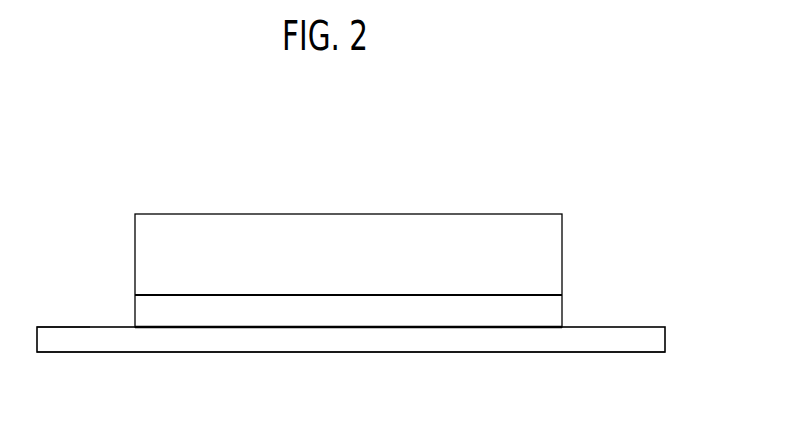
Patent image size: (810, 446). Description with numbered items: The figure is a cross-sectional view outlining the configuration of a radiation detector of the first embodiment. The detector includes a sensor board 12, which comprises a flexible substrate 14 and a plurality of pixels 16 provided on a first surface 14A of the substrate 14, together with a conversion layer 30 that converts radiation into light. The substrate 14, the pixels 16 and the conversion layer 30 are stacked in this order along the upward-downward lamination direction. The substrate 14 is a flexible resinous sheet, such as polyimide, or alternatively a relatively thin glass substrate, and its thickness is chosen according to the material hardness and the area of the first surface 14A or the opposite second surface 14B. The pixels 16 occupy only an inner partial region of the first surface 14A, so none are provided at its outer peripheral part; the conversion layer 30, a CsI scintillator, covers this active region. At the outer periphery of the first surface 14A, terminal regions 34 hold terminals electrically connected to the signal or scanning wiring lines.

The sensor board 12 is at (399, 322).
The substrate 14 is at (652, 342).
The first surface 14A is at (177, 327).
The second surface 14B is at (479, 353).
The pixels 16 is at (551, 303).
The conversion layer 30 is at (550, 255).
The terminal regions 34 is at (90, 327).